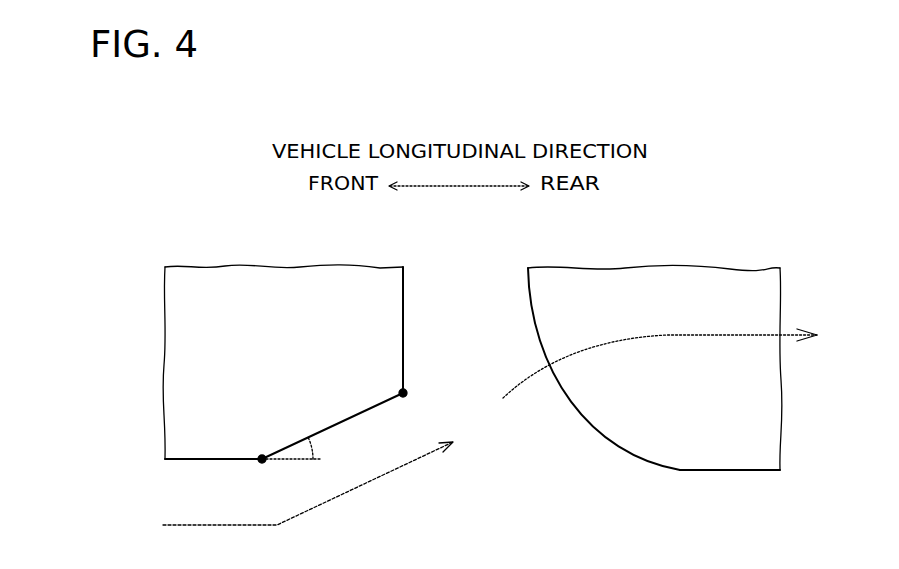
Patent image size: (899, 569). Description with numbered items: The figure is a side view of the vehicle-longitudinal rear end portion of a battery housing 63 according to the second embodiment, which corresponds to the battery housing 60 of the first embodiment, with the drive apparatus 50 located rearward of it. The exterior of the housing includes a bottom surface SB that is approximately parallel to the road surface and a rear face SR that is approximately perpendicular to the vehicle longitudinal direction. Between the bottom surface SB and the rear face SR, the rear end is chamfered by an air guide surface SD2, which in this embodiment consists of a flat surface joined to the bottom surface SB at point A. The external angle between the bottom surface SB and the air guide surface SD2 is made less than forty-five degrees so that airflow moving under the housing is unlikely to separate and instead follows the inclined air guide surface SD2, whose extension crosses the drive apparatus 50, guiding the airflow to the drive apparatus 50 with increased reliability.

The battery housing 63 is at (307, 366).
The battery housing 60 is at (307, 366).
The drive apparatus 50 is at (580, 285).
The rear face SR is at (407, 320).
The bottom surface SB is at (202, 463).
The air guide surface SD2 is at (370, 412).